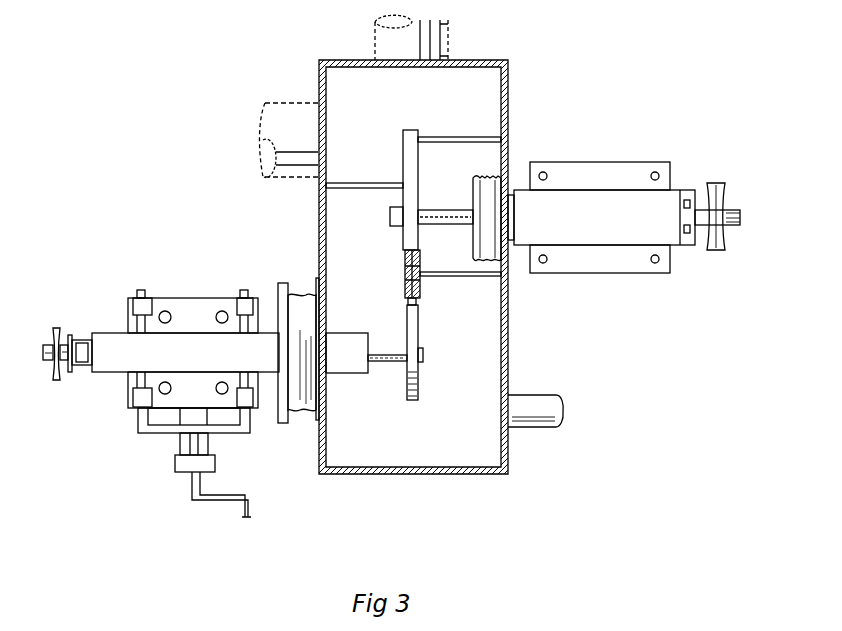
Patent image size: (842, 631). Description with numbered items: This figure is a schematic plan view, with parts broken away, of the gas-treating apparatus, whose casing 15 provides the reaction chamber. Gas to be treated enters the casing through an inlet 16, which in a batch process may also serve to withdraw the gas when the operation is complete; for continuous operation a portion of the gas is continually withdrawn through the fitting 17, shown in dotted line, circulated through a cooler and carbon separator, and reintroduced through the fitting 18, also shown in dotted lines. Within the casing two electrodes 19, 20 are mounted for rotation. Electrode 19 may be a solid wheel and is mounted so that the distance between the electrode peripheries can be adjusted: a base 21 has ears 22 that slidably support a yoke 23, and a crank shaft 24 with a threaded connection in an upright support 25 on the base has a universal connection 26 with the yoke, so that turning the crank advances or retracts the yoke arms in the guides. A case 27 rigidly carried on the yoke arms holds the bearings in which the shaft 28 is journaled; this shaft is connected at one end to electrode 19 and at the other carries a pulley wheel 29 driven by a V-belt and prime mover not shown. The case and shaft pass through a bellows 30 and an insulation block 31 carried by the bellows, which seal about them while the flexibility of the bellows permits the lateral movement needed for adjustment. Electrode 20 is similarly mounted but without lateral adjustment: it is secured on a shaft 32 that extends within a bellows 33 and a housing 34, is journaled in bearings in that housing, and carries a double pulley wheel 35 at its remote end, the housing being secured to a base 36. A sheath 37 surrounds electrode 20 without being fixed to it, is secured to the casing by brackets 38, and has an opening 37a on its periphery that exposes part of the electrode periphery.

The casing 15 is at (509, 96).
The inlet 16 is at (545, 398).
The fitting 17 is at (449, 28).
The fitting 18 is at (264, 160).
The electrode 19 is at (412, 330).
The electrode 20 is at (421, 283).
The base 21 is at (193, 303).
The ears 22 is at (141, 303).
The yoke 23 is at (150, 434).
The crank shaft 24 is at (200, 483).
The upright support 25 is at (207, 465).
The universal connection 26 is at (180, 448).
The case 27 is at (120, 363).
The shaft 28 is at (380, 360).
The pulley wheel 29 is at (58, 330).
The bellows 30 is at (303, 298).
The insulation block 31 is at (283, 292).
The shaft 32 is at (441, 212).
The bellows 33 is at (490, 178).
The housing 34 is at (655, 232).
The double pulley wheel 35 is at (722, 200).
The base 36 is at (618, 262).
The sheath 37 is at (410, 137).
The opening 37a is at (407, 283).
The brackets 38 is at (348, 183).